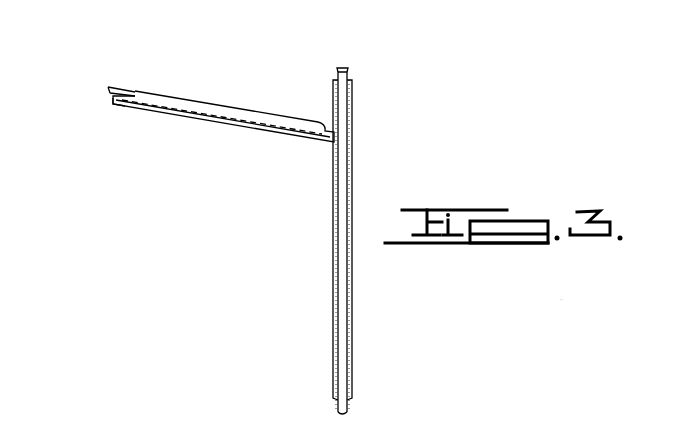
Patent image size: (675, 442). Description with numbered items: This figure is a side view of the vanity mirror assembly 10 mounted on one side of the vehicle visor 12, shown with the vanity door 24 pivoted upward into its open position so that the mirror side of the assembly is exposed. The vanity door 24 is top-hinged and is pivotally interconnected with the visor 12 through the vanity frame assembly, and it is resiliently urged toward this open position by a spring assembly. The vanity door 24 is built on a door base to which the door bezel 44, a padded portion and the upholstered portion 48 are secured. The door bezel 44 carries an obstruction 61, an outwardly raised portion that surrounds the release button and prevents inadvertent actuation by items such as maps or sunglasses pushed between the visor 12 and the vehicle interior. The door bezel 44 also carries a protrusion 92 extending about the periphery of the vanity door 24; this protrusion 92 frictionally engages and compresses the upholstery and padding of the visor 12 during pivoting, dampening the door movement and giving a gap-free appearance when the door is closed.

The vanity mirror assembly 10 is at (109, 85).
The vehicle visor 12 is at (345, 118).
The vanity door 24 is at (110, 102).
The door bezel 44 is at (137, 105).
The upholstered portion 48 is at (193, 92).
The obstruction 61 is at (108, 92).
The protrusion 92 is at (200, 120).